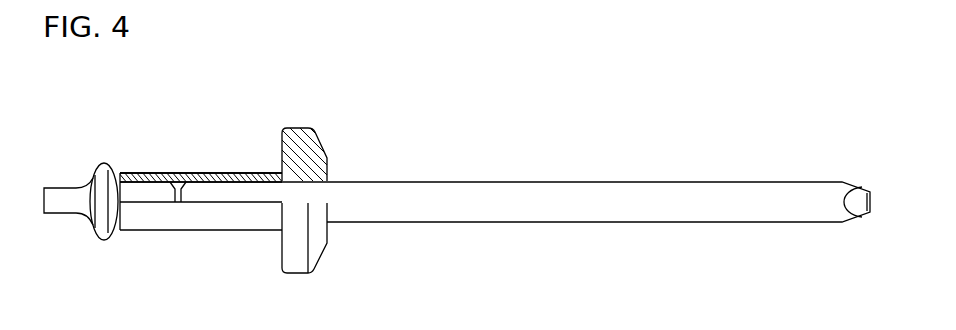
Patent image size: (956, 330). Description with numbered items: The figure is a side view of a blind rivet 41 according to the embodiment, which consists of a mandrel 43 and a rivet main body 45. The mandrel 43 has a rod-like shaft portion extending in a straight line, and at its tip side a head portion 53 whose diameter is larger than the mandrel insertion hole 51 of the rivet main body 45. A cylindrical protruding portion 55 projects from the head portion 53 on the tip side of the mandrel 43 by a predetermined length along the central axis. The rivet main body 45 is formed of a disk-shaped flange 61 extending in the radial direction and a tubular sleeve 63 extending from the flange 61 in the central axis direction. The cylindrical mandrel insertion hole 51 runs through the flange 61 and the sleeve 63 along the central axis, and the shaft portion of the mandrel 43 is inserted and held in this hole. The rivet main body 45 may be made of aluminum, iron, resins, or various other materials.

The blind rivet 41 is at (483, 132).
The mandrel 43 is at (443, 208).
The rivet main body 45 is at (243, 172).
The mandrel insertion hole 51 is at (242, 183).
The head portion 53 is at (108, 166).
The protruding portion 55 is at (65, 202).
The flange 61 is at (298, 133).
The sleeve 63 is at (198, 172).